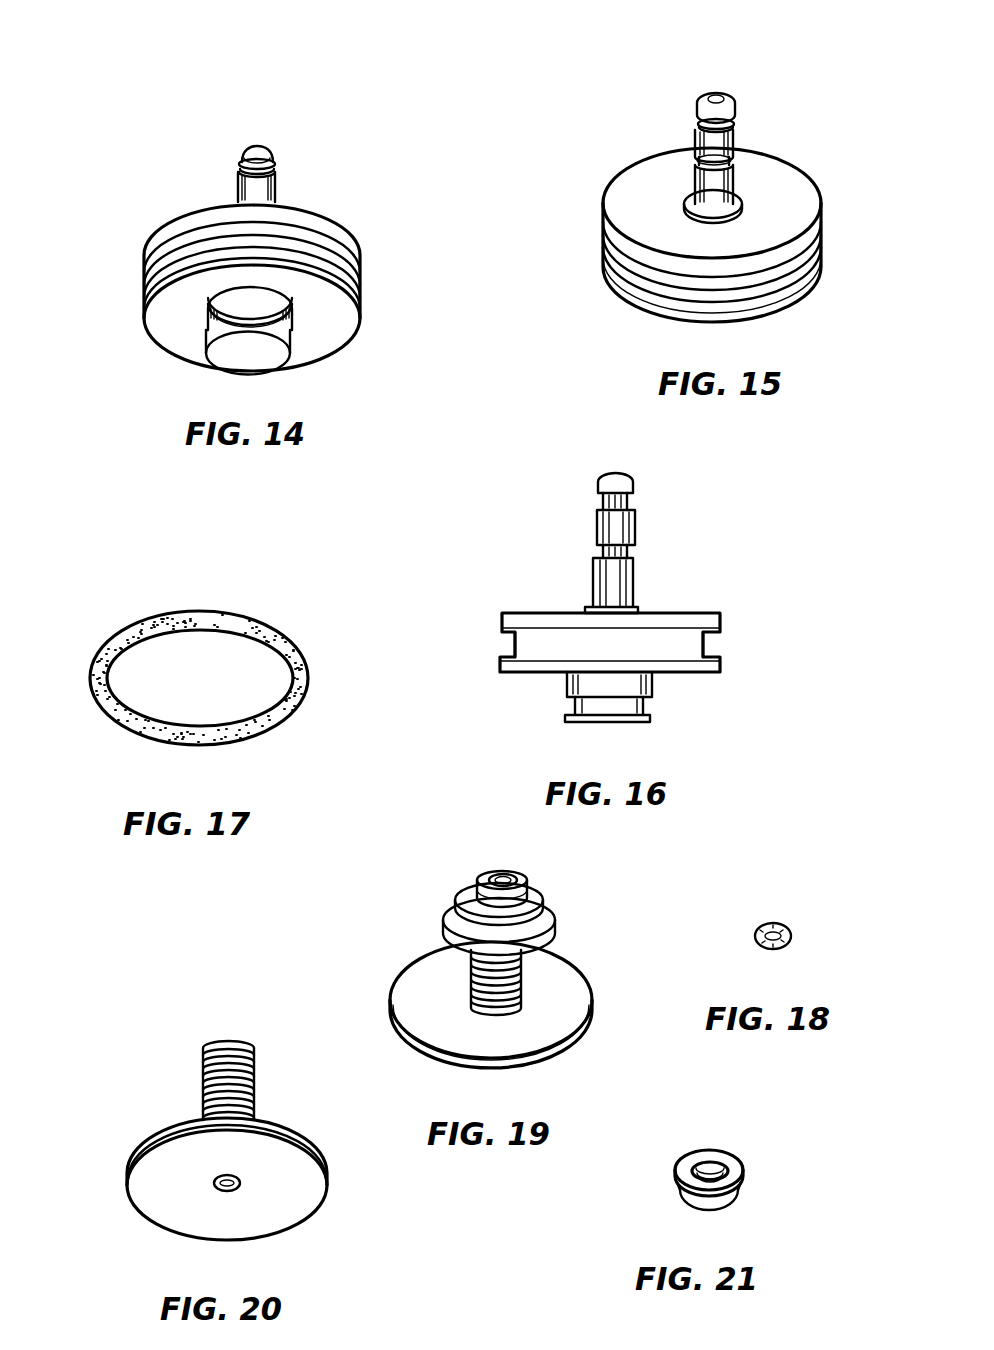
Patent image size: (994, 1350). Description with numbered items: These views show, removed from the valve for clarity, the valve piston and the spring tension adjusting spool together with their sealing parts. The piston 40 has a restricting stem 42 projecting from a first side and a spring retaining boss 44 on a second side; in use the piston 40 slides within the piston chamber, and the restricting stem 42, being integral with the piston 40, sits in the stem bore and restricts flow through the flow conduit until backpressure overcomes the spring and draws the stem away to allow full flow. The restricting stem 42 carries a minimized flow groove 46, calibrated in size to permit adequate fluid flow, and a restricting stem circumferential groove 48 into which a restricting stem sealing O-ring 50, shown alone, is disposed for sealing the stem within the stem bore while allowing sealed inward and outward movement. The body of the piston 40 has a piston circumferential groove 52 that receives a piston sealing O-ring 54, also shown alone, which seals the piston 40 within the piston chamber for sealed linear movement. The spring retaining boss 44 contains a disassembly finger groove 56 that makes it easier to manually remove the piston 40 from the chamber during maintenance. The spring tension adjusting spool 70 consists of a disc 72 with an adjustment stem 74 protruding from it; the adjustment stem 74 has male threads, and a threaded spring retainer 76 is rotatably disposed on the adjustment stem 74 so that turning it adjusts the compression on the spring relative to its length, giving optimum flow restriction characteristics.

In FIG. 14, the piston 40 is at (329, 212).
In FIG. 15, the piston 40 is at (794, 151).
In FIG. 16, the piston 40 is at (489, 627).
In FIG. 14, the restricting stem 42 is at (238, 186).
In FIG. 15, the restricting stem 42 is at (694, 146).
In FIG. 16, the restricting stem 42 is at (597, 527).
In FIG. 14, the spring retaining boss 44 is at (207, 312).
In FIG. 16, the spring retaining boss 44 is at (650, 683).
In FIG. 14, the flow groove 46 is at (274, 162).
In FIG. 15, the flow groove 46 is at (735, 117).
In FIG. 16, the flow groove 46 is at (632, 505).
In FIG. 15, the restricting stem circumferential groove 48 is at (692, 152).
In FIG. 16, the restricting stem circumferential groove 48 is at (630, 548).
In FIG. 18, the restricting stem sealing O-ring 50 is at (774, 921).
In FIG. 14, the piston circumferential groove 52 is at (160, 260).
In FIG. 15, the piston circumferential groove 52 is at (782, 277).
In FIG. 16, the piston circumferential groove 52 is at (703, 645).
In FIG. 17, the piston sealing O-ring 54 is at (162, 617).
In FIG. 14, the disassembly finger groove 56 is at (292, 338).
In FIG. 16, the disassembly finger groove 56 is at (572, 703).
In FIG. 19, the spring tension adjusting spool 70 is at (405, 950).
In FIG. 19, the disc 72 is at (562, 1050).
In FIG. 20, the disc 72 is at (163, 1225).
In FIG. 19, the adjustment stem 74 is at (520, 972).
In FIG. 20, the adjustment stem 74 is at (202, 1073).
In FIG. 19, the threaded spring retainer 76 is at (457, 897).
In FIG. 21, the threaded spring retainer 76 is at (735, 1160).